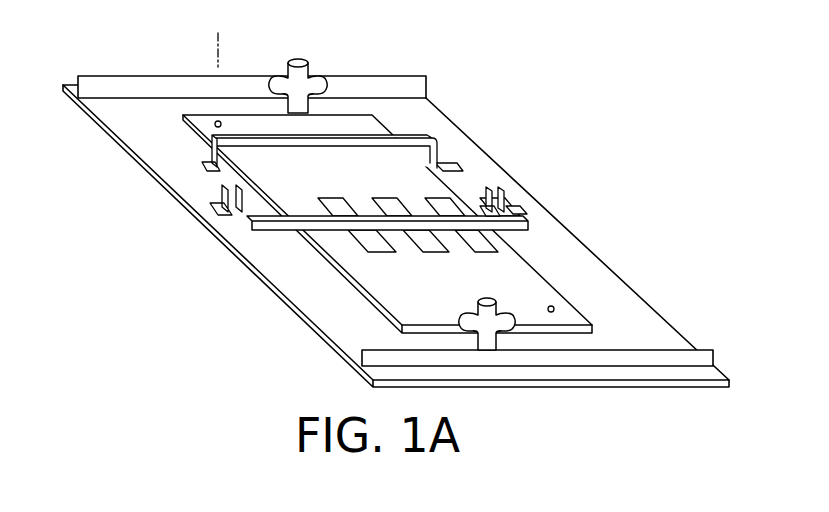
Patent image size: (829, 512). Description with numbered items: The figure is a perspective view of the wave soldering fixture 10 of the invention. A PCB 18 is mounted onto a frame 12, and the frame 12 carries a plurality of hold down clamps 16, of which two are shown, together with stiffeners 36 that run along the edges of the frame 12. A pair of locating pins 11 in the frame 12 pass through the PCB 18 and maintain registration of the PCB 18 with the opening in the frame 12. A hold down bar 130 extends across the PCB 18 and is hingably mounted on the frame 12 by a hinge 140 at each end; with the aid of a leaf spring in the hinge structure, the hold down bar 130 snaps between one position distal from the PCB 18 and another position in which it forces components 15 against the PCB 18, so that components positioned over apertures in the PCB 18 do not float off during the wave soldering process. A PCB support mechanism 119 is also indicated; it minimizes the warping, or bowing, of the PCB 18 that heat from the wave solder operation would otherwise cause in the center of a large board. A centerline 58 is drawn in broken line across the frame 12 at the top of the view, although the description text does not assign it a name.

The fixture 10 is at (394, 211).
The locating pins 11 is at (214, 124).
The frame 12 is at (432, 112).
The components 15 is at (445, 202).
The hold down clamps 16 is at (300, 75).
The PCB 18 is at (394, 178).
The stiffeners 36 is at (112, 83).
The centerline 58 is at (217, 60).
The PCB support mechanism 119 is at (206, 152).
The hold down bar 130 is at (467, 212).
The hinge 140 is at (210, 204).